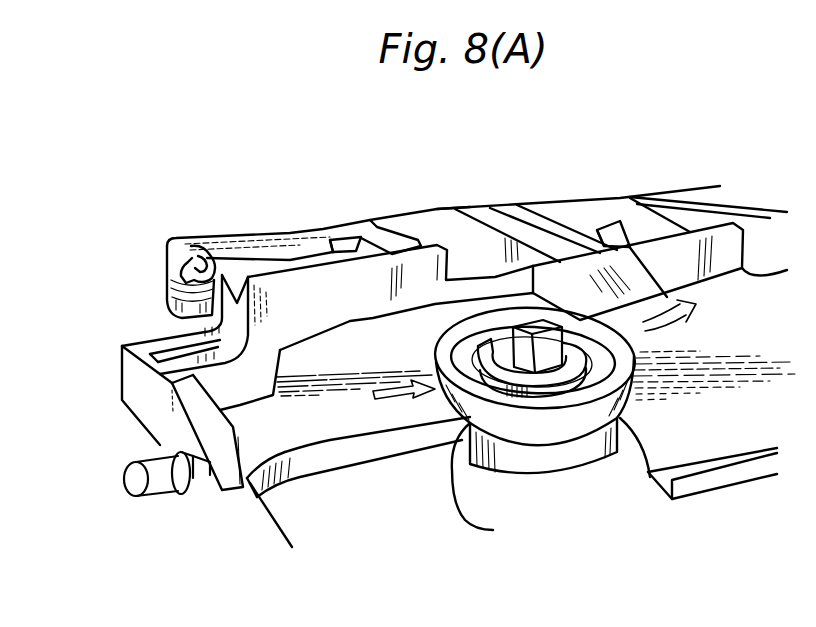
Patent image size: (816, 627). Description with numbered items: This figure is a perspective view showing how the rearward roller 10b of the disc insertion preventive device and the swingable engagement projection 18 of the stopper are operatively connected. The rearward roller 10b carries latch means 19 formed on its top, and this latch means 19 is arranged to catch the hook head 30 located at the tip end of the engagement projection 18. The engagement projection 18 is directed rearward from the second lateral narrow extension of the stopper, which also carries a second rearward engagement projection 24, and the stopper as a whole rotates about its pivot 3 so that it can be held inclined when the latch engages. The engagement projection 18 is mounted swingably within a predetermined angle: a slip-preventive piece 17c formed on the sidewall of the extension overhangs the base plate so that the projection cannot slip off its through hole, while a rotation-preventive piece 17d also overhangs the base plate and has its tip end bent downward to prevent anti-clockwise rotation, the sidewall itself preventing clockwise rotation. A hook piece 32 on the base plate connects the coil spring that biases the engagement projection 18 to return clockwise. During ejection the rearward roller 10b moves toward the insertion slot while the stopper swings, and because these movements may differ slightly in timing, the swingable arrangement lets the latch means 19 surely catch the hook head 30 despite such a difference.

The pivot 3 is at (125, 461).
The rearward roller 10b is at (537, 497).
The slip-preventive piece 17c is at (352, 243).
The rotation-preventive piece 17d is at (609, 233).
The engagement projection 18 is at (455, 199).
The latch means 19 is at (541, 346).
The engagement projection 24 is at (232, 427).
The hook head 30 is at (643, 322).
The hook piece 32 is at (165, 240).